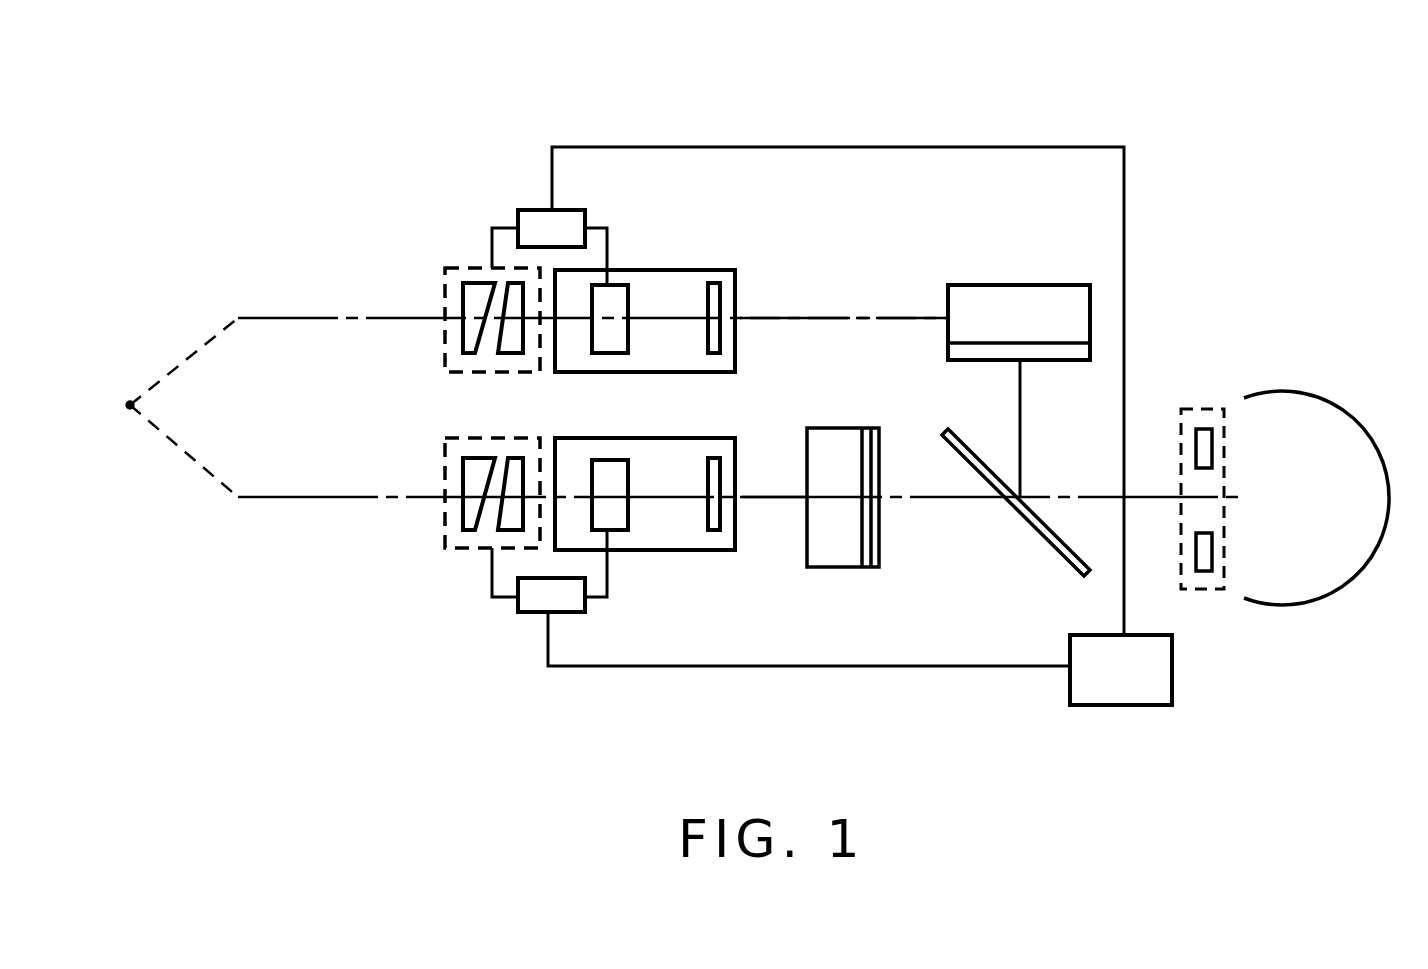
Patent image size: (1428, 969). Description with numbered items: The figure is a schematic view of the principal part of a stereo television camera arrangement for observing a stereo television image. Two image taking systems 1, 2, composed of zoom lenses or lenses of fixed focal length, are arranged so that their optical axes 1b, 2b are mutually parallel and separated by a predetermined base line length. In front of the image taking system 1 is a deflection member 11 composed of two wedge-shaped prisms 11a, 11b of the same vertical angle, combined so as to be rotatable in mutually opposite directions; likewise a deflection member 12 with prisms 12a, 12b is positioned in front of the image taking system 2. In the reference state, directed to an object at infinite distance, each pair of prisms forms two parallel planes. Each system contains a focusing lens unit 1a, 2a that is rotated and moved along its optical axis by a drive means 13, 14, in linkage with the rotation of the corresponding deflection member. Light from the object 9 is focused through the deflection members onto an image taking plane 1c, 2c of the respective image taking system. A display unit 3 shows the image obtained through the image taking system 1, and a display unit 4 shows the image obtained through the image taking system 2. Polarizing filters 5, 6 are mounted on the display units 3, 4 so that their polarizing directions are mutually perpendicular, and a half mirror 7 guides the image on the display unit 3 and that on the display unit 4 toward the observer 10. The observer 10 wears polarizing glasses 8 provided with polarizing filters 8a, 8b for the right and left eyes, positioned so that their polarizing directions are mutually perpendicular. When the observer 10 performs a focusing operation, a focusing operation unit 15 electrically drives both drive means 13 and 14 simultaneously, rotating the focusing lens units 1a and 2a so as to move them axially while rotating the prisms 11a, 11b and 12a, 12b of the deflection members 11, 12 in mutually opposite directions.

The image taking system 1 is at (693, 270).
The focusing lens unit 1a is at (612, 290).
The optical axis 1b is at (845, 318).
The image taking plane 1c is at (720, 305).
The image taking system 2 is at (672, 550).
The focusing lens unit 2a is at (618, 530).
The optical axis 2b is at (757, 500).
The image taking plane 2c is at (712, 532).
The display unit 3 is at (1013, 298).
The display unit 4 is at (830, 567).
The polarizing filter 5 is at (1060, 352).
The polarizing filter 6 is at (868, 567).
The half mirror 7 is at (1050, 552).
The polarizing glasses 8 is at (1225, 410).
The polarizing filter 8a is at (1215, 410).
The polarizing filter 8b is at (1208, 590).
The object 9 is at (130, 410).
The observer 10 is at (1360, 422).
The deflection member 11 is at (448, 268).
The wedge-shaped prism 11a is at (470, 353).
The wedge-shaped prism 11b is at (510, 353).
The deflection member 12 is at (450, 550).
The wedge-shaped prism 12a is at (462, 462).
The wedge-shaped prism 12b is at (518, 458).
The drive means 13 is at (565, 215).
The drive means 14 is at (518, 612).
The focusing operation unit 15 is at (1125, 705).